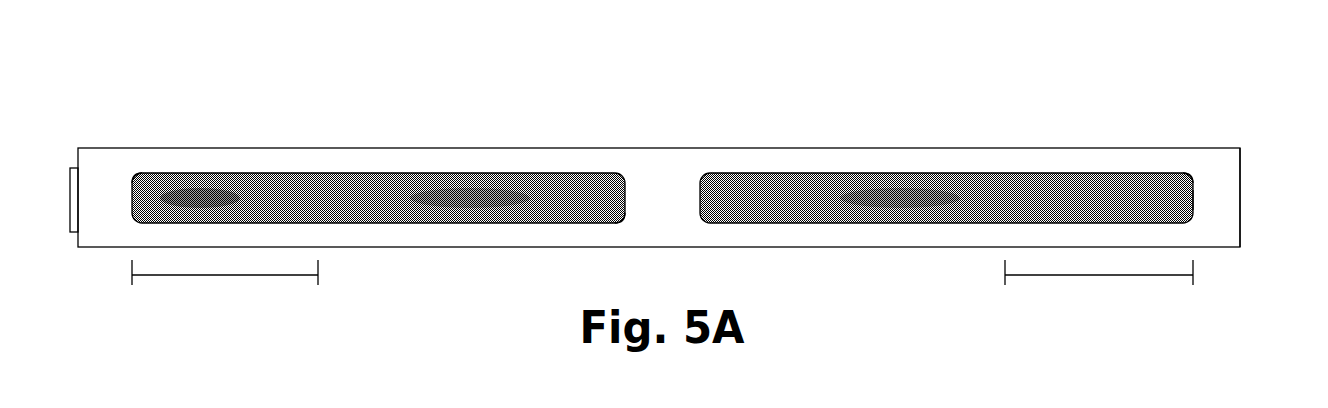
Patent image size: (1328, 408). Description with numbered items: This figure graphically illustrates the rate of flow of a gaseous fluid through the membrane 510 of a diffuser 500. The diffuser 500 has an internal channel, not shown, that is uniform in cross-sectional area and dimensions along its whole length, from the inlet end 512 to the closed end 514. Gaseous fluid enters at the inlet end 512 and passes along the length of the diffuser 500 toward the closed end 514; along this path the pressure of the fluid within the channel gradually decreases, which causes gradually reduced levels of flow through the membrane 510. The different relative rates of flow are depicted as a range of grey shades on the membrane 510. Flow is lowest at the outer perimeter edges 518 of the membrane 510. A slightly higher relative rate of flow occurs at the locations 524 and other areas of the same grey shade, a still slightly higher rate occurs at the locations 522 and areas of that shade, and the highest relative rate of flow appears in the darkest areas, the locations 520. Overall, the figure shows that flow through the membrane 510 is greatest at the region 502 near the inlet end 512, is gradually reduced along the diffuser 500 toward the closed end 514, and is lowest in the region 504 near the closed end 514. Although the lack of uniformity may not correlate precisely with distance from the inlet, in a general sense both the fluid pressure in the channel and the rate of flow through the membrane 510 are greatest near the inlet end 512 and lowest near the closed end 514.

The diffuser 500 is at (330, 86).
The region 502 is at (220, 277).
The second region 504 is at (1103, 277).
The membrane 510 is at (588, 198).
The inlet end 512 is at (78, 118).
The closed end 514 is at (1258, 122).
The outer perimeter edges 518 is at (136, 178).
The locations of highest flow 520 is at (193, 196).
The locations of still slightly higher flow 522 is at (338, 198).
The locations of slightly higher flow 524 is at (1177, 178).